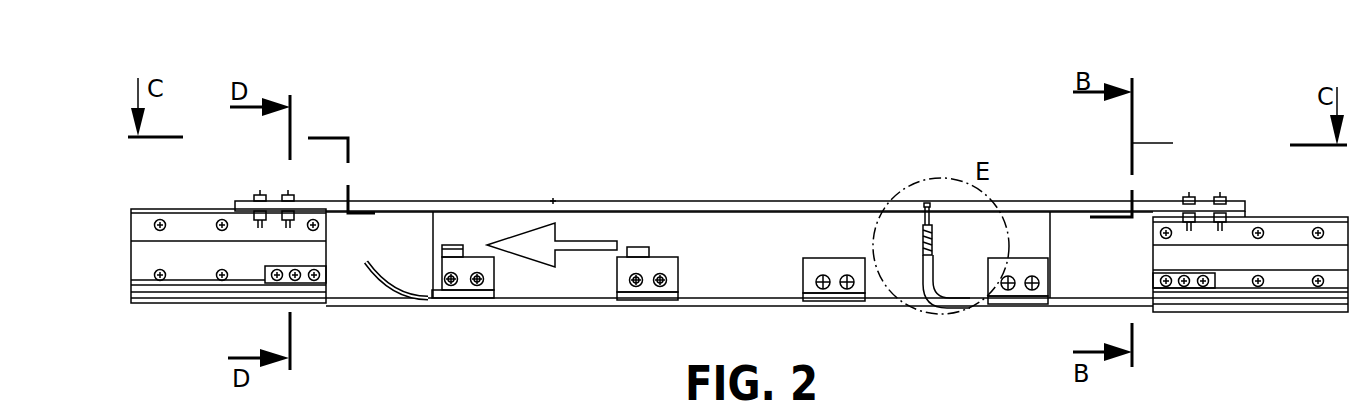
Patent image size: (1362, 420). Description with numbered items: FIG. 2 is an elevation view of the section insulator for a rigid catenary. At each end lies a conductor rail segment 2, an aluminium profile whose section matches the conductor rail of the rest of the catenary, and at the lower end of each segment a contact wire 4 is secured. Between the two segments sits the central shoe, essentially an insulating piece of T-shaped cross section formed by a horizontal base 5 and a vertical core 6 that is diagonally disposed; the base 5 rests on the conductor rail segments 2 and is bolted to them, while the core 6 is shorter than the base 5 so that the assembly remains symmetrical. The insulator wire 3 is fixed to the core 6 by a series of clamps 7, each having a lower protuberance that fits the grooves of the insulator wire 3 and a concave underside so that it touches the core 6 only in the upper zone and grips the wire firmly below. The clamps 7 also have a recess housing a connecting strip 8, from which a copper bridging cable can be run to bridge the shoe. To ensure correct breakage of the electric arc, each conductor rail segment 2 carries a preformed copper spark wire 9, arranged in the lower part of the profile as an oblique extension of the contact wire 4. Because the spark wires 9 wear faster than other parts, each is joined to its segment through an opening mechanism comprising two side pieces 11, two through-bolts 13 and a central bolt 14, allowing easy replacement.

The conductor rail segment 2 is at (188, 227).
The insulator wire 3 is at (742, 300).
The contact wire 4 is at (170, 300).
The base 5 is at (405, 208).
The core 6 is at (468, 225).
The clamp 7 is at (487, 262).
The connecting strip 8 is at (638, 255).
The spark wire 9 is at (924, 255).
The side piece 11 is at (265, 283).
The through-bolt 13 is at (295, 283).
The central bolt 14 is at (1186, 276).